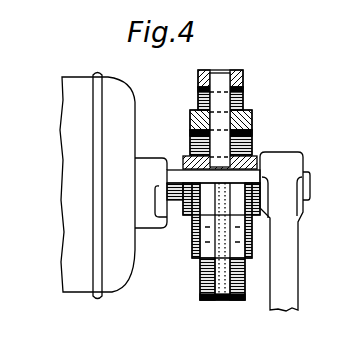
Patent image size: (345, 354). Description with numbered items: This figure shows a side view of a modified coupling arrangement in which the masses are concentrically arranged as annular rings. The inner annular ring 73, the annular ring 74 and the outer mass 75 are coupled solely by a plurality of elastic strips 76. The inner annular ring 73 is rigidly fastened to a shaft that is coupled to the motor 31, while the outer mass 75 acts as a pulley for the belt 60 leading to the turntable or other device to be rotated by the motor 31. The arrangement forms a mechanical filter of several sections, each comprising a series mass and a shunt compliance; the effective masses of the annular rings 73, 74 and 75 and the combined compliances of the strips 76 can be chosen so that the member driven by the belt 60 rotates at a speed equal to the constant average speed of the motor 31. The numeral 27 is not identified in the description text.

The shaft 27 is at (176, 172).
The motor 31 is at (118, 100).
The belt 60 is at (236, 105).
The inner annular ring 73 is at (256, 158).
The annular ring 74 is at (252, 124).
The outer mass 75 is at (243, 77).
The elastic strips 76 is at (222, 99).